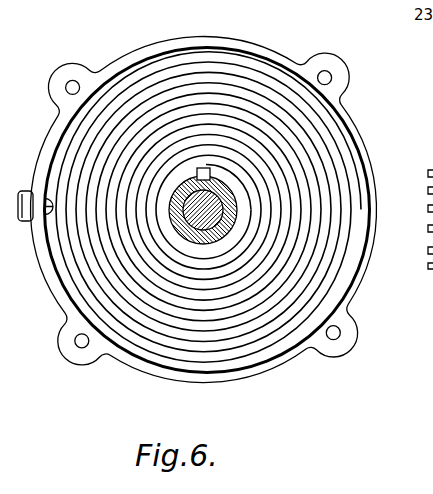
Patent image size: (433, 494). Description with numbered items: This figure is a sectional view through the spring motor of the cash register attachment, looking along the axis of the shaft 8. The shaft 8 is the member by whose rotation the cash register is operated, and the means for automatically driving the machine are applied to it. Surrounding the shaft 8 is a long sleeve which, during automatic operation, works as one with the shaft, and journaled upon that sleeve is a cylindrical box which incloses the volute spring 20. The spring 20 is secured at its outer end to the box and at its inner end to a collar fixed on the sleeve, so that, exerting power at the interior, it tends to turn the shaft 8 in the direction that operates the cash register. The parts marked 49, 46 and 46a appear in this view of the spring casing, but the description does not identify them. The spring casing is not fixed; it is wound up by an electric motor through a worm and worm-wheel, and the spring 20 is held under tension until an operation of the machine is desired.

The mounting flange with lugs 49 is at (174, 40).
The volute spring 20 is at (326, 280).
The spiral spring 46 is at (177, 228).
The inner end of spiral spring 46a is at (247, 205).
The shaft 8 is at (204, 220).